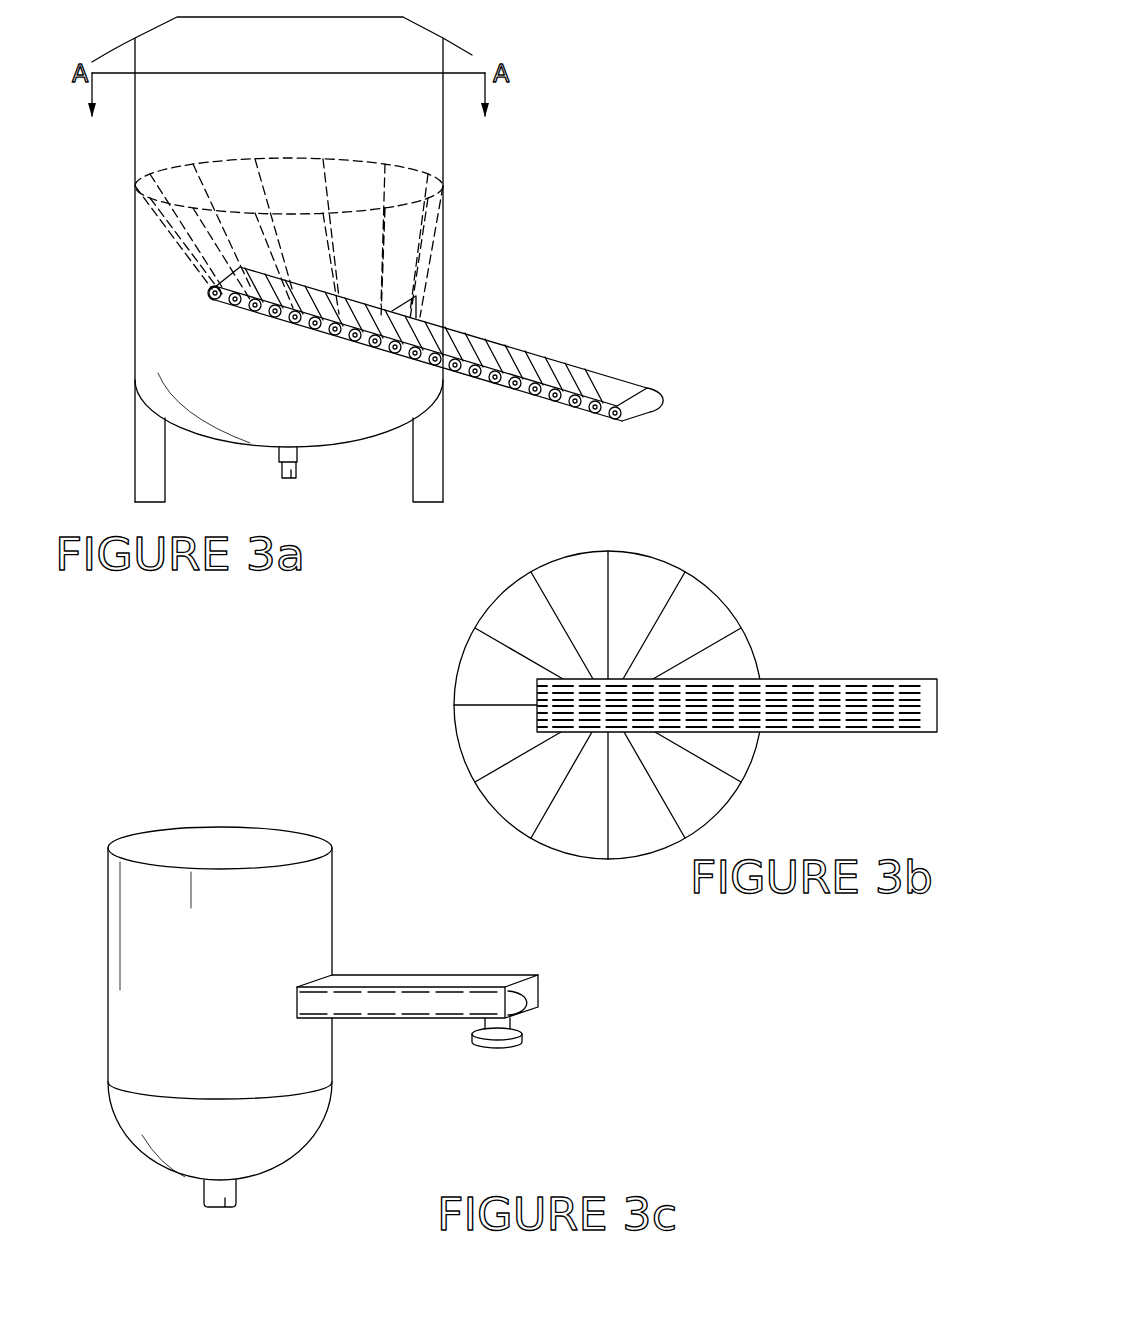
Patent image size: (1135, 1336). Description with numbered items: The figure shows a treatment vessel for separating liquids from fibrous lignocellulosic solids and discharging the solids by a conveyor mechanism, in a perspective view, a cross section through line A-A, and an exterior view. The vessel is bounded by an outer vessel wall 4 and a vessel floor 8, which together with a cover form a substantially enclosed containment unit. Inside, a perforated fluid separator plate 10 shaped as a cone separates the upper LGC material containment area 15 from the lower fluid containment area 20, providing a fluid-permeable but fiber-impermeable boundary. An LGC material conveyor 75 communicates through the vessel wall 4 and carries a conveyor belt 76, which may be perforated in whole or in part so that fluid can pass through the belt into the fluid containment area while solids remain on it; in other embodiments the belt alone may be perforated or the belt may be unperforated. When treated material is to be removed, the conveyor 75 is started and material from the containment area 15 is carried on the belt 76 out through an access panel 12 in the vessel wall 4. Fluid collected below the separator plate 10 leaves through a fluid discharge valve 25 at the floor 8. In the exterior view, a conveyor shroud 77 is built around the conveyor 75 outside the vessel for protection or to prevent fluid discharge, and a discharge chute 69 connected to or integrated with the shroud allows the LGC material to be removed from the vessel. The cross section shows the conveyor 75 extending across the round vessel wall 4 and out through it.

In FIG. 3A, the vessel wall 4 is at (446, 148).
In FIG. 3B, the vessel wall 4 is at (714, 578).
In FIG. 3C, the vessel wall 4 is at (104, 994).
In FIG. 3A, the vessel floor 8 is at (339, 452).
In FIG. 3C, the vessel floor 8 is at (321, 1129).
In FIG. 3A, the perforated fluid separator plate 10 is at (178, 257).
In FIG. 3A, the access panel 12 is at (425, 312).
In FIG. 3A, the LGC material containment area 15 is at (292, 145).
In FIG. 3A, the fluid containment area 20 is at (273, 373).
In FIG. 3A, the fluid discharge valve 25 is at (273, 458).
In FIG. 3C, the fluid discharge valve 25 is at (230, 1213).
In FIG. 3C, the discharge chute 69 is at (501, 1055).
In FIG. 3A, the LGC material conveyor 75 is at (571, 422).
In FIG. 3B, the LGC material conveyor 75 is at (914, 736).
In FIG. 3C, the LGC material conveyor 75 is at (427, 1010).
In FIG. 3A, the conveyor belt 76 is at (547, 348).
In FIG. 3B, the conveyor belt 76 is at (879, 678).
In FIG. 3C, the conveyor belt 76 is at (543, 991).
In FIG. 3C, the conveyor shroud 77 is at (512, 973).